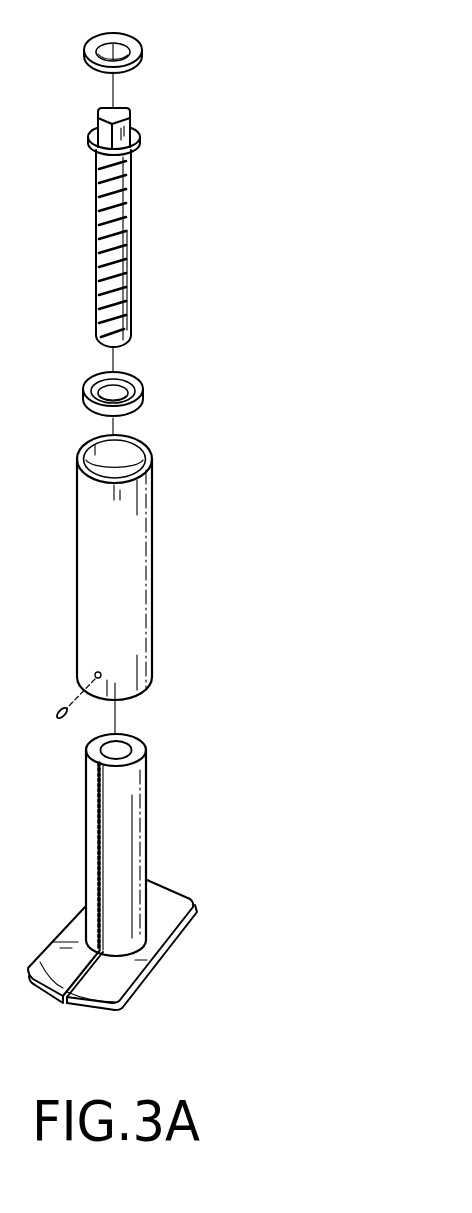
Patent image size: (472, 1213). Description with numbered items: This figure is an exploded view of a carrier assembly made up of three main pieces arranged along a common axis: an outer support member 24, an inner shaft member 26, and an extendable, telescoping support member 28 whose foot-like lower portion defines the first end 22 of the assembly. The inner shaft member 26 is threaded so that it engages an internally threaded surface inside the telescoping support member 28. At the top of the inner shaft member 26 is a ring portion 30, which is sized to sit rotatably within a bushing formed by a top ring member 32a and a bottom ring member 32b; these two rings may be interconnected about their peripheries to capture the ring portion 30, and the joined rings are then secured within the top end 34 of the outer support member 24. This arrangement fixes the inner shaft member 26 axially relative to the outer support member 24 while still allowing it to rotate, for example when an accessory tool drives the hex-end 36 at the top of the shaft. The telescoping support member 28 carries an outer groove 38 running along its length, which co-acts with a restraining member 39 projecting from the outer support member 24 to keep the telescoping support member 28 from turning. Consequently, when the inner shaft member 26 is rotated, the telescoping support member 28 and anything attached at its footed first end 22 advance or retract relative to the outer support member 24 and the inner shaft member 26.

The first end 22 is at (187, 928).
The outer support member 24 is at (152, 622).
The inner shaft member 26 is at (132, 284).
The telescoping support member 28 is at (146, 801).
The ring portion 30 is at (140, 134).
The top ring member 32a is at (142, 44).
The bottom ring member 32b is at (143, 393).
The top end 34 is at (147, 463).
The hex-end 36 is at (130, 108).
The outer groove 38 is at (102, 866).
The restraining member 39 is at (56, 719).